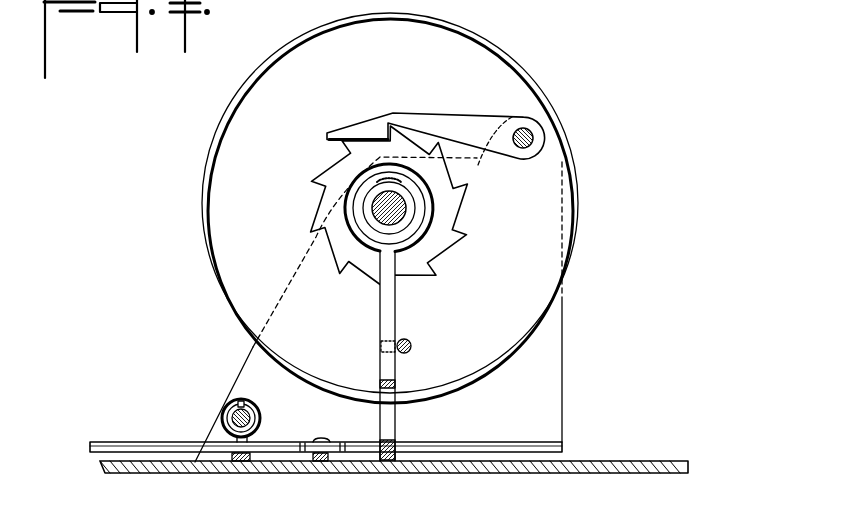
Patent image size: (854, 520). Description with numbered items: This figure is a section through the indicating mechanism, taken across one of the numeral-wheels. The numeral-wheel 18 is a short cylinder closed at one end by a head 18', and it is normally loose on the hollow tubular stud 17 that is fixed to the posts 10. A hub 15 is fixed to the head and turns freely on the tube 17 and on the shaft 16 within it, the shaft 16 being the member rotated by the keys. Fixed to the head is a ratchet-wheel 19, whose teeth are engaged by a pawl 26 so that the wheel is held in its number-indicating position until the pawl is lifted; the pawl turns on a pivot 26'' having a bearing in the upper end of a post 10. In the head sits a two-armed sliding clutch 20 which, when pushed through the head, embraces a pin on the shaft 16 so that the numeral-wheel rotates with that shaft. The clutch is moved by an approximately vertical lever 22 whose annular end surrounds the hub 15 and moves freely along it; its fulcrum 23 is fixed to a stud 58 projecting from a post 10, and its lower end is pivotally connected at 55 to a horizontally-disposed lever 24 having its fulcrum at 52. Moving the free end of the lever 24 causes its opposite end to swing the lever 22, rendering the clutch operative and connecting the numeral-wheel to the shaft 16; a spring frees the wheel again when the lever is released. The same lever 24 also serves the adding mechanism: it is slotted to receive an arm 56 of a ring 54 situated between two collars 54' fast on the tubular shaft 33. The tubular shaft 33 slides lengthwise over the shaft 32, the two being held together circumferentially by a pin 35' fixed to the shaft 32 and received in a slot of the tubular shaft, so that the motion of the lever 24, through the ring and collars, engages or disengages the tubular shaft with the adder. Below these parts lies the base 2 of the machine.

The base / ground 2 is at (393, 474).
The post 10 is at (555, 342).
The hub 15 is at (414, 194).
The shaft 16 is at (378, 221).
The tubular stud 17 is at (401, 222).
The numeral-wheel 18 is at (390, 203).
The head 18' is at (390, 211).
The ratchet-wheel 19 is at (457, 207).
The sliding clutch 20 is at (411, 181).
The lever 22 is at (396, 376).
The fulcrum 23 is at (380, 347).
The lever 24 is at (297, 442).
The pawl 26 is at (436, 127).
The pivot 26'' is at (526, 157).
The shaft 32 is at (262, 412).
The tubular shaft 33 is at (227, 412).
The pin 35' is at (248, 391).
The fulcrum 52 is at (327, 442).
The ring 54 is at (237, 404).
The collar 54' is at (337, 277).
The pivotal connection 55 is at (396, 448).
The arm 56 is at (237, 440).
The stud 58 is at (412, 344).